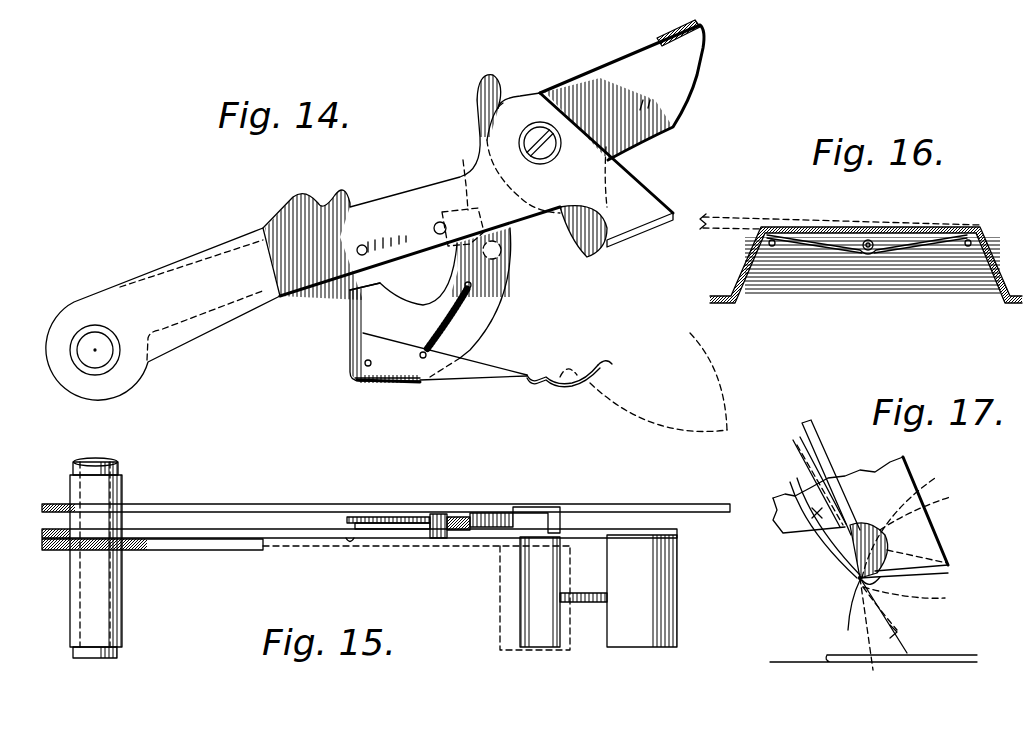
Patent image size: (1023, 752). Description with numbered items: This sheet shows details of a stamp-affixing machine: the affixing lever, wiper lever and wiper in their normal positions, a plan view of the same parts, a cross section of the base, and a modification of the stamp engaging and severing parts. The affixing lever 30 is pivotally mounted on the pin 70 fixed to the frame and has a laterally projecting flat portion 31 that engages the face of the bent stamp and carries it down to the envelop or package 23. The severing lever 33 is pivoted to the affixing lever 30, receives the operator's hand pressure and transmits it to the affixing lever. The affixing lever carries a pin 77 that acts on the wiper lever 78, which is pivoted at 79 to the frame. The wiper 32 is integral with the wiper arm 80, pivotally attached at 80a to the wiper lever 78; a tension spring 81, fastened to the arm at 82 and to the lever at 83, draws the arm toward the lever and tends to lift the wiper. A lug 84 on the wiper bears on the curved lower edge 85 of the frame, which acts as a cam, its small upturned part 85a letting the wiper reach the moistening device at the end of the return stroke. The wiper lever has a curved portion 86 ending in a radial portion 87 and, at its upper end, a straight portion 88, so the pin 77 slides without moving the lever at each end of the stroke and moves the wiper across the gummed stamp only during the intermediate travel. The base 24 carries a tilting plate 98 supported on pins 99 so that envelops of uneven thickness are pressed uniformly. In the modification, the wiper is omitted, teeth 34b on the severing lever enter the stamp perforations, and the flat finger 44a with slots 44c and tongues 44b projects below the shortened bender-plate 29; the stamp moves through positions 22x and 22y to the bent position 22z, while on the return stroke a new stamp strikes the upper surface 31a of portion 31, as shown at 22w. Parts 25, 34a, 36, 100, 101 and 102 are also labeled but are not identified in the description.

In FIG. 17, the dotted-line stamp position 22w is at (924, 522).
In FIG. 17, the dotted-line stamp position 22x is at (946, 599).
In FIG. 17, the stamp position 22y is at (902, 633).
In FIG. 17, the bent stamp position 22z is at (877, 639).
In FIG. 17, the envelop or package 23 is at (937, 651).
In FIG. 16, the base 24 is at (995, 263).
In FIG. 15, the base plate 25 is at (207, 549).
In FIG. 17, the bender-plate 29 is at (820, 453).
In FIG. 14, the affixing lever 30 is at (640, 192).
In FIG. 15, the affixing lever 30 is at (643, 537).
In FIG. 17, the affixing lever 30 is at (927, 530).
In FIG. 17, the laterally projecting flat portion 31 is at (948, 567).
In FIG. 17, the upper surface of laterally projecting portion 31a is at (900, 548).
In FIG. 14, the wiper 32 is at (537, 382).
In FIG. 15, the wiper 32 is at (540, 637).
In FIG. 14, the severing lever 33 is at (650, 105).
In FIG. 17, the blade face 34a is at (880, 577).
In FIG. 17, the teeth 34b is at (857, 587).
In FIG. 14, the pin 36 is at (363, 245).
In FIG. 15, the pin 36 is at (350, 546).
In FIG. 17, the flat finger 44a is at (840, 577).
In FIG. 17, the tongues 44b is at (850, 600).
In FIG. 17, the slots 44c is at (850, 577).
In FIG. 15, the pin 70 is at (93, 658).
In FIG. 14, the pin 77 is at (437, 222).
In FIG. 15, the pin 77 is at (440, 514).
In FIG. 14, the wiper lever 78 is at (377, 388).
In FIG. 15, the wiper lever 78 is at (385, 517).
In FIG. 14, the pivot 79 is at (502, 252).
In FIG. 14, the wiper arm 80 is at (478, 375).
In FIG. 15, the wiper arm 80 is at (505, 513).
In FIG. 14, the pivotal attachment 80a is at (365, 364).
In FIG. 15, the pivotal attachment 80a is at (590, 603).
In FIG. 14, the tension spring 81 is at (455, 318).
In FIG. 15, the tension spring 81 is at (460, 517).
In FIG. 14, the spring attachment point 82 is at (423, 360).
In FIG. 14, the spring attachment point 83 is at (471, 286).
In FIG. 15, the laterally projecting lug 84 is at (553, 513).
In FIG. 14, the lower edge of frame 85 is at (628, 413).
In FIG. 14, the upwardly turned part 85a is at (573, 370).
In FIG. 14, the curved portion 86 is at (463, 272).
In FIG. 14, the radial portion 87 is at (355, 287).
In FIG. 14, the straight portion 88 is at (463, 166).
In FIG. 16, the tilting plate 98 is at (857, 242).
In FIG. 16, the pins 99 is at (873, 242).
In FIG. 16, the hole 100 is at (772, 247).
In FIG. 16, the hole 101 is at (968, 247).
In FIG. 16, the rivet 102 is at (863, 217).